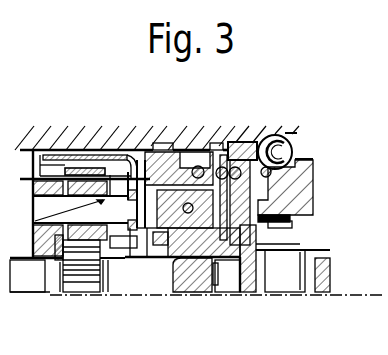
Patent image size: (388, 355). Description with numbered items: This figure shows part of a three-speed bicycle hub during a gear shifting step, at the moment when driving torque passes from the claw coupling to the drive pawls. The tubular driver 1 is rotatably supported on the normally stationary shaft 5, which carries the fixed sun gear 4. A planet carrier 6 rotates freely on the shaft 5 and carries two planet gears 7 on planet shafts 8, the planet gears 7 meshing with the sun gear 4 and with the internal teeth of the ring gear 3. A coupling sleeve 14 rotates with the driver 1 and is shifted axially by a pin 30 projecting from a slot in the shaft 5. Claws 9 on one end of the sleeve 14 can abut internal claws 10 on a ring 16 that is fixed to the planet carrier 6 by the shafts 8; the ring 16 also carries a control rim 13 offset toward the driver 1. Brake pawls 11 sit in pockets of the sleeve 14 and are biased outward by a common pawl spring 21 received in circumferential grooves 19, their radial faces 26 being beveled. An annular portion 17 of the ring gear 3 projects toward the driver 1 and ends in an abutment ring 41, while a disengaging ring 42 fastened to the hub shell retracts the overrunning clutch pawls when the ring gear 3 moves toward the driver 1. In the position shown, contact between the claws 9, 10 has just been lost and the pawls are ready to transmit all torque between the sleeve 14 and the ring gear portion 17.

The driver 1 is at (298, 178).
The ring gear 3 is at (55, 158).
The sun gear 4 is at (80, 285).
The shaft 5 is at (25, 285).
The planet carrier 6 is at (33, 233).
The planet gears 7 is at (82, 168).
The planet shafts 8 is at (33, 199).
The claws 9 is at (137, 242).
The internal claws 10 is at (110, 262).
The brake pawls 11 is at (226, 276).
The control rim 13 is at (137, 168).
The coupling sleeve 14 is at (190, 250).
The ring 16 is at (111, 150).
The annular portion 17 is at (147, 167).
The circumferential grooves 19 is at (183, 168).
The pawl spring 21 is at (194, 156).
The radial faces 26 is at (147, 242).
The pin 30 is at (254, 292).
The abutment ring 41 is at (262, 203).
The disengaging ring 42 is at (242, 140).